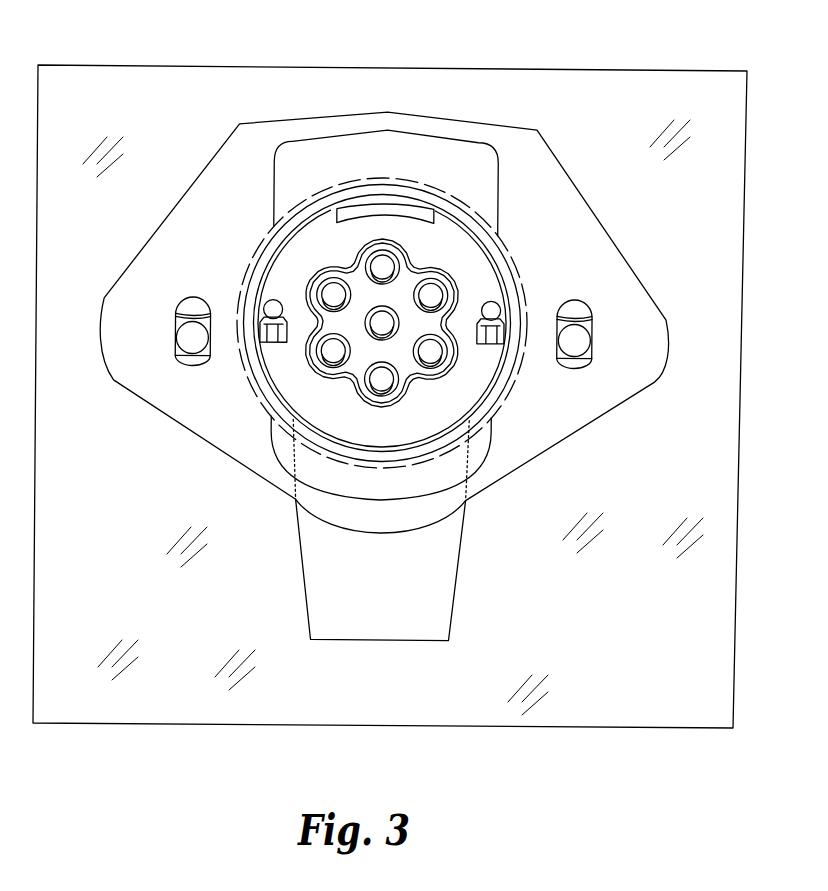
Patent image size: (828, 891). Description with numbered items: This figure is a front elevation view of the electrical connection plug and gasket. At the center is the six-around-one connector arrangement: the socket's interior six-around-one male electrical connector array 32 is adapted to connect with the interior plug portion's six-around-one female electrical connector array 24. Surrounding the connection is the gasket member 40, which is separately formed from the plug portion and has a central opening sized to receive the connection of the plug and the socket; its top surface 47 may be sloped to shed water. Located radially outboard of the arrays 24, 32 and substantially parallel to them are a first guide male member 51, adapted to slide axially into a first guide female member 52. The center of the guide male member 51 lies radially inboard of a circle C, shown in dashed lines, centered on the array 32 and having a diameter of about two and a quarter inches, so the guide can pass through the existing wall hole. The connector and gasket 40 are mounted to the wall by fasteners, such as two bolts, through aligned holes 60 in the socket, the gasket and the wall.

The 6-around-1 female electrical connector array 24 is at (418, 338).
The interior 6-around-1 male electrical connector array 32 is at (377, 382).
The gasket member 40 is at (580, 220).
The top surface 47 is at (433, 117).
The first guide male member 51 is at (268, 304).
The first guide female member 52 is at (265, 346).
The aligned holes 60 is at (193, 341).
The circle C is at (266, 307).